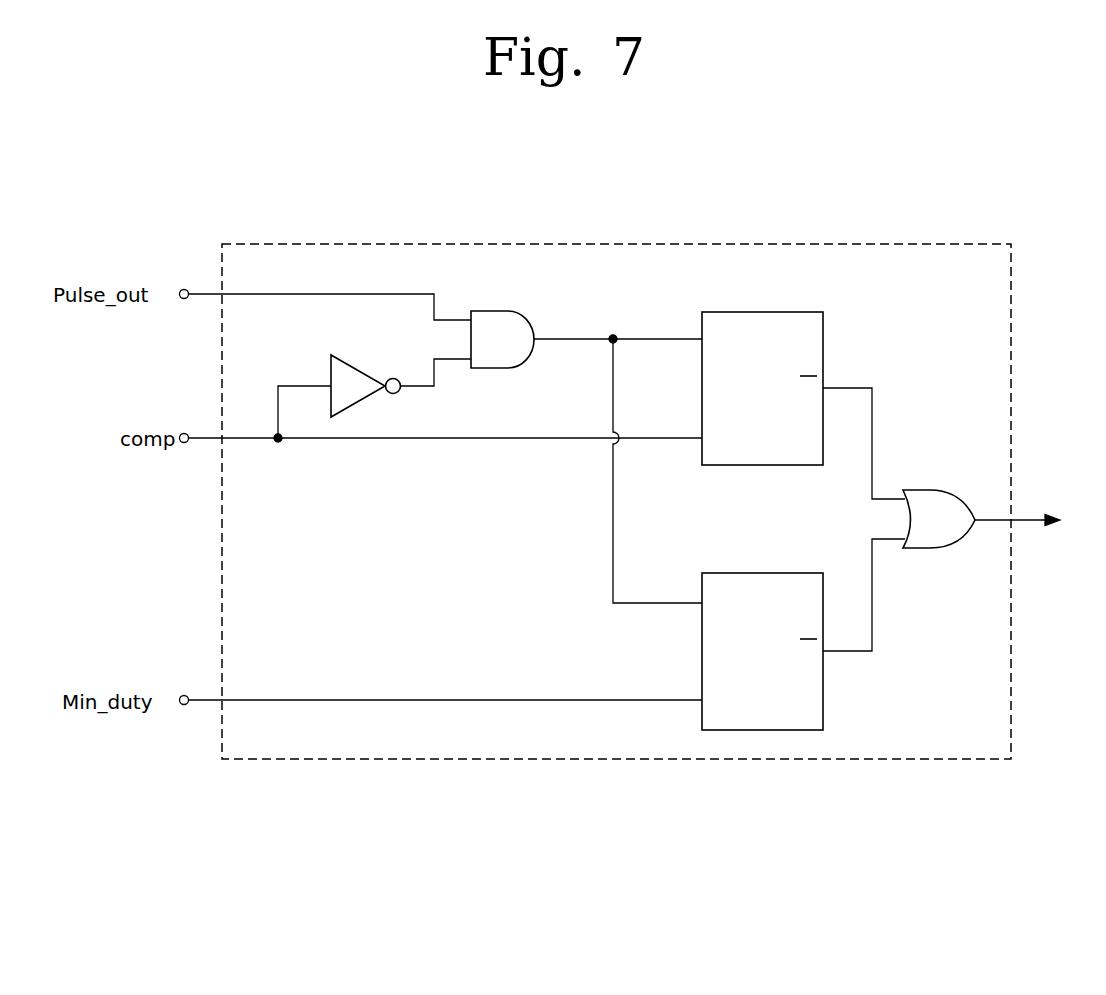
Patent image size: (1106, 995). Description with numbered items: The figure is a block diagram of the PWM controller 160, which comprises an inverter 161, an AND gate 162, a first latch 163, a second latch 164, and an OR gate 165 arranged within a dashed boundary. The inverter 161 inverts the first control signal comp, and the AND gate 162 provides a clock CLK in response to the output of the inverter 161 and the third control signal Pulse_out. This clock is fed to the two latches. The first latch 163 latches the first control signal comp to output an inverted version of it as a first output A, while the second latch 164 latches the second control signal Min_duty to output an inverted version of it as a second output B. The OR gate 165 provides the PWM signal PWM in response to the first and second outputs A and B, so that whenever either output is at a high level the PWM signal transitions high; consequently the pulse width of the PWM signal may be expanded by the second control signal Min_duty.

The PWM controller 160 is at (890, 244).
The inverter 161 is at (358, 366).
The AND gate 162 is at (520, 310).
The first latch 163 is at (791, 312).
The second latch 164 is at (791, 573).
The OR gate 165 is at (961, 492).